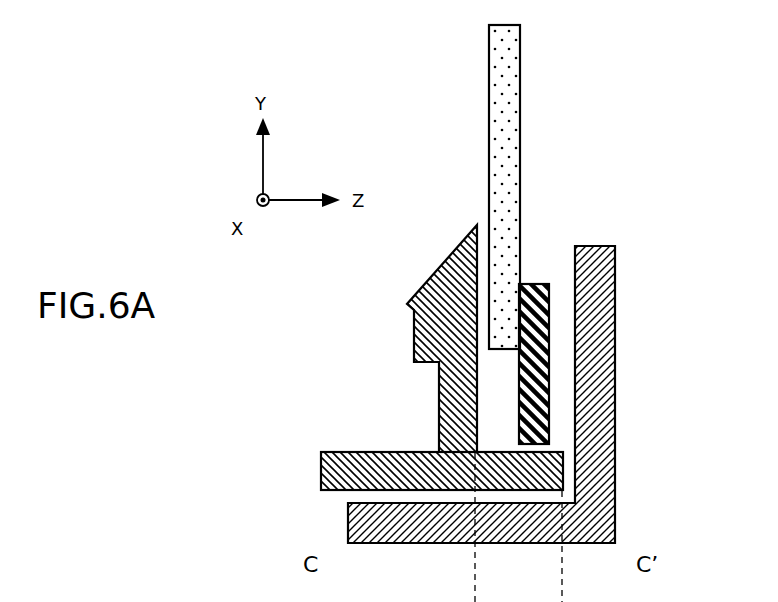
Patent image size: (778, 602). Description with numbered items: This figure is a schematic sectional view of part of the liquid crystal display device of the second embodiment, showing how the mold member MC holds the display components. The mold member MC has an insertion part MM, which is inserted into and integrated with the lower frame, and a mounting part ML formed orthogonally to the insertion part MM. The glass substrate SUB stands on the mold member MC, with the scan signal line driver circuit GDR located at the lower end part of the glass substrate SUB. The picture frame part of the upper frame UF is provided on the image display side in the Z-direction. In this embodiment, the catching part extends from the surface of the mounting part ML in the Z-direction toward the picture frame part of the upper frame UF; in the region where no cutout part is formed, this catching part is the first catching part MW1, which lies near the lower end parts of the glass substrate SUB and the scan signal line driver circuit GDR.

The glass substrate SUB is at (507, 97).
The scan signal line driver circuit GDR is at (538, 283).
The upper frame UF is at (610, 245).
The mounting part ML is at (441, 283).
The mold member MC is at (377, 411).
The insertion part MM is at (327, 452).
The first catching part MW1 is at (542, 478).